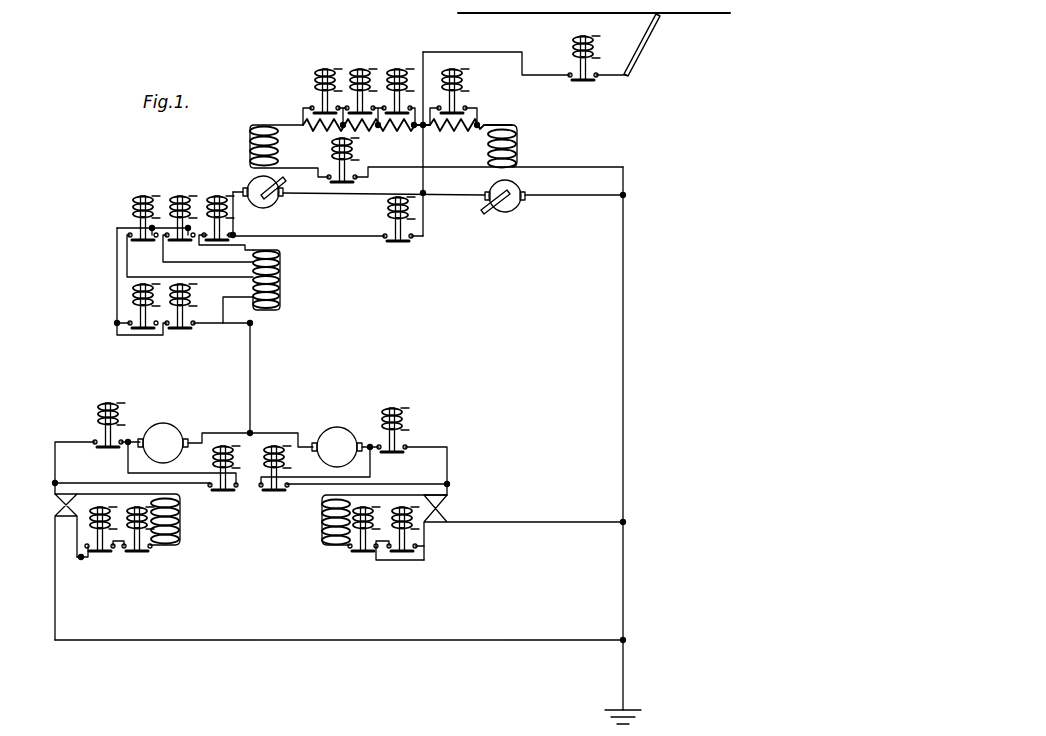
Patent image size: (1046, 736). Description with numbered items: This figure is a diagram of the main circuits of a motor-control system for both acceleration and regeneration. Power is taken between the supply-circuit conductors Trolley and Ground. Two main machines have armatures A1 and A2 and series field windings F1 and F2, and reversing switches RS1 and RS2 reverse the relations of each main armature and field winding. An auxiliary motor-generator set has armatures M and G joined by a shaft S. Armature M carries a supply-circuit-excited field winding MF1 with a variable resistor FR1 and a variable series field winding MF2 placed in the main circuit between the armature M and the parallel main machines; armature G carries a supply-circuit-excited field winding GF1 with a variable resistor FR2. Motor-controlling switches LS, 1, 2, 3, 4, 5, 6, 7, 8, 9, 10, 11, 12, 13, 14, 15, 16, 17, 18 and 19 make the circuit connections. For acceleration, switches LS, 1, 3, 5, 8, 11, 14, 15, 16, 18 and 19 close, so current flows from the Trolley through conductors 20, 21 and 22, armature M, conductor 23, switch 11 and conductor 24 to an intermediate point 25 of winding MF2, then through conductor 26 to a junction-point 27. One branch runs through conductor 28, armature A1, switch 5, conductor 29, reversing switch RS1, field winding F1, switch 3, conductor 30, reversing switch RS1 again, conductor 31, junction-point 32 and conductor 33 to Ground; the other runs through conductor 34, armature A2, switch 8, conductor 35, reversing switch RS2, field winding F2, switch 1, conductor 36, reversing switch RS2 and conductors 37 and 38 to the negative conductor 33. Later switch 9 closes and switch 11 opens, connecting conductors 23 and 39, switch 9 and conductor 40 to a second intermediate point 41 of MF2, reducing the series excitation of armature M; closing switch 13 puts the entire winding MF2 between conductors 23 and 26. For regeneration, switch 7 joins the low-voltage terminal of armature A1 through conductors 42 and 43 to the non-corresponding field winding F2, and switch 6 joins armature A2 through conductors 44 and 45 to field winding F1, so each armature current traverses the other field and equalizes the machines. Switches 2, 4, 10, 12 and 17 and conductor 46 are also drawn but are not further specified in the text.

The motor-controlling switch 1 is at (364, 558).
The motor-controlling switch 2 is at (404, 558).
The motor-controlling switch 3 is at (145, 556).
The motor-controlling switch 4 is at (103, 558).
The motor-controlling switch 5 is at (97, 416).
The motor-controlling switch 6 is at (237, 488).
The motor-controlling switch 7 is at (280, 488).
The motor-controlling switch 8 is at (409, 424).
The motor-controlling switch 9 is at (128, 300).
The motor-controlling switch 10 is at (192, 291).
The motor-controlling switch 11 is at (148, 185).
The motor-controlling switch 12 is at (186, 185).
The motor-controlling switch 13 is at (222, 185).
The motor-controlling switch 14 is at (409, 76).
The motor-controlling switch 15 is at (372, 76).
The motor-controlling switch 16 is at (337, 76).
The motor-controlling switch 17 is at (390, 247).
The motor-controlling switch 18 is at (340, 150).
The motor-controlling switch 19 is at (468, 95).
The conductor 20 is at (524, 58).
The conductor 21 is at (424, 184).
The conductor 22 is at (380, 196).
The conductor 23 is at (236, 230).
The conductor 24 is at (130, 258).
The intermediate point 25 is at (253, 289).
The conductor 26 is at (250, 356).
The junction-point 27 is at (252, 432).
The conductor 28 is at (224, 432).
The conductor 29 is at (75, 452).
The conductor 30 is at (55, 541).
The conductor 31 is at (55, 573).
The junction-point 32 is at (622, 642).
The negative conductor 33 is at (623, 697).
The conductor 34 is at (298, 433).
The conductor 35 is at (448, 471).
The conductor 36 is at (426, 547).
The conductor 37 is at (578, 524).
The conductor 38 is at (623, 577).
The conductor 39 is at (117, 257).
The conductor 40 is at (219, 318).
The second intermediate point 41 is at (252, 305).
The conductor 42 is at (128, 469).
The conductor 43 is at (309, 487).
The conductor 44 is at (371, 475).
The conductor 45 is at (199, 485).
The conductor 46 is at (204, 252).
The auxiliary armature M is at (276, 203).
The auxiliary armature G is at (492, 186).
The shaft S is at (286, 178).
The main armature A1 is at (163, 443).
The main armature A2 is at (337, 447).
The supply-circuit-excited field-magnet winding MF1 is at (250, 145).
The variable series field-magnet winding MF2 is at (280, 289).
The supply-circuit-excited field-magnet winding GF1 is at (515, 146).
The variable resistor FR1 is at (372, 130).
The variable resistor FR2 is at (447, 132).
The main field-magnet winding F1 is at (180, 527).
The main field-magnet winding F2 is at (322, 525).
The reversing switch RS1 is at (55, 504).
The reversing switch RS2 is at (447, 508).
The motor-controlling switch LS is at (587, 57).
The supply-circuit conductor Trolley is at (594, 44).
The supply-circuit conductor Ground is at (658, 720).